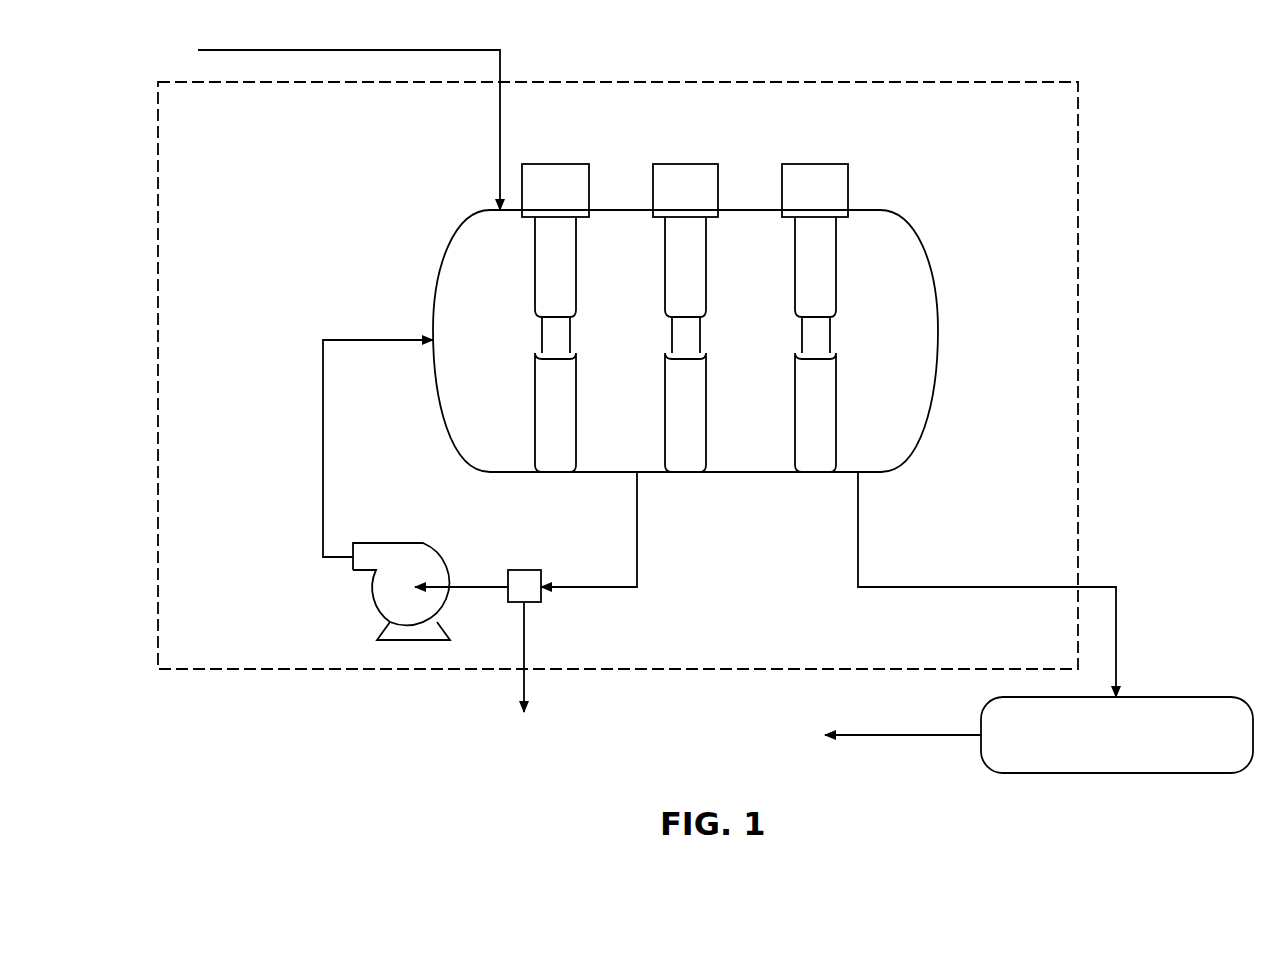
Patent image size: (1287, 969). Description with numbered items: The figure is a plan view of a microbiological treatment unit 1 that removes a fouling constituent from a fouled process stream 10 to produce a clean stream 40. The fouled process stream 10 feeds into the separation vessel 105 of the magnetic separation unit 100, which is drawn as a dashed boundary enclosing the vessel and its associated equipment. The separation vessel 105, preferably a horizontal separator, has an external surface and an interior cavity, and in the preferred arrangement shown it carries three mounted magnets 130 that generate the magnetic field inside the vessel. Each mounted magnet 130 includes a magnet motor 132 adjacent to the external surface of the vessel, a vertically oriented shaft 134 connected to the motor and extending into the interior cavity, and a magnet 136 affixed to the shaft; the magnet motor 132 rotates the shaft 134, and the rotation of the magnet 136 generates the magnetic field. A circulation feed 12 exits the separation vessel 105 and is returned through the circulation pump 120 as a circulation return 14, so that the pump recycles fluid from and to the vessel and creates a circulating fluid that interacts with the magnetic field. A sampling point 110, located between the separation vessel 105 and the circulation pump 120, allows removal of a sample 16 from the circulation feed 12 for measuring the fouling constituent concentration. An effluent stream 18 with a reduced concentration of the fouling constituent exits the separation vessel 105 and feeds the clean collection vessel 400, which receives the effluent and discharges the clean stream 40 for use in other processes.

The microbiological treatment unit 1 is at (1140, 182).
The fouled process stream 10 is at (371, 50).
The magnetic separation unit 100 is at (240, 136).
The separation vessel 105 is at (916, 350).
The sampling point 110 is at (524, 570).
The circulation feed 12 is at (636, 541).
The circulation pump 120 is at (372, 599).
The mounted magnet 130 is at (693, 145).
The magnet motor 132 is at (708, 204).
The shaft 134 is at (688, 333).
The magnet 136 is at (681, 255).
The circulation return 14 is at (324, 380).
The sample 16 is at (527, 683).
The effluent stream 18 is at (908, 590).
The clean stream 40 is at (915, 737).
The clean collection vessel 400 is at (1140, 748).